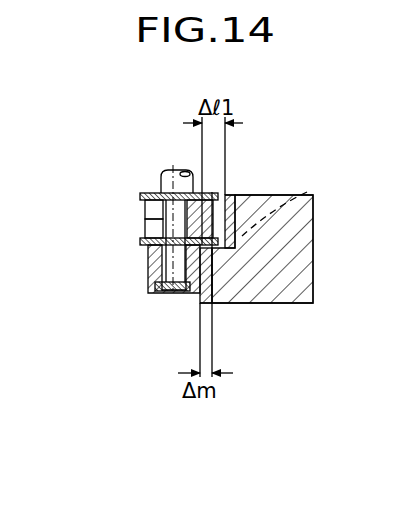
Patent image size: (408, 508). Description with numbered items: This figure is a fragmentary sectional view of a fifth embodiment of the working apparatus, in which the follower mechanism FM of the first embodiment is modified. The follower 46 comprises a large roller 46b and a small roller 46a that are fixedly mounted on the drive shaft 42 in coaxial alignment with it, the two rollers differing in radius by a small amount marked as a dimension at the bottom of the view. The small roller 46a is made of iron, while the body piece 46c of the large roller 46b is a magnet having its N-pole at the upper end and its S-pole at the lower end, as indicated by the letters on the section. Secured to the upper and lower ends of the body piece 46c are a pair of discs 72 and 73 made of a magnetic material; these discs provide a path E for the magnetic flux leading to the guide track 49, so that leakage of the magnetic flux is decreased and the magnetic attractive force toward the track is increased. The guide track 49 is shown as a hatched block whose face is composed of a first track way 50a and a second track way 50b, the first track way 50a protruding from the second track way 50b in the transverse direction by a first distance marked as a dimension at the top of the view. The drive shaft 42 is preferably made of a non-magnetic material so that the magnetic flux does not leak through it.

The drive shaft 42 is at (161, 183).
The upper disc 72 is at (148, 194).
The follower 46 is at (138, 294).
The small roller 46a is at (150, 275).
The large roller 46b is at (143, 216).
The body piece 46c is at (146, 229).
The lower disc 73 is at (148, 246).
The guide track 49 is at (305, 250).
The first track way 50a is at (193, 273).
The second track way 50b is at (224, 207).
The path for magnetic flux E is at (307, 192).
The follower mechanism FM is at (167, 355).